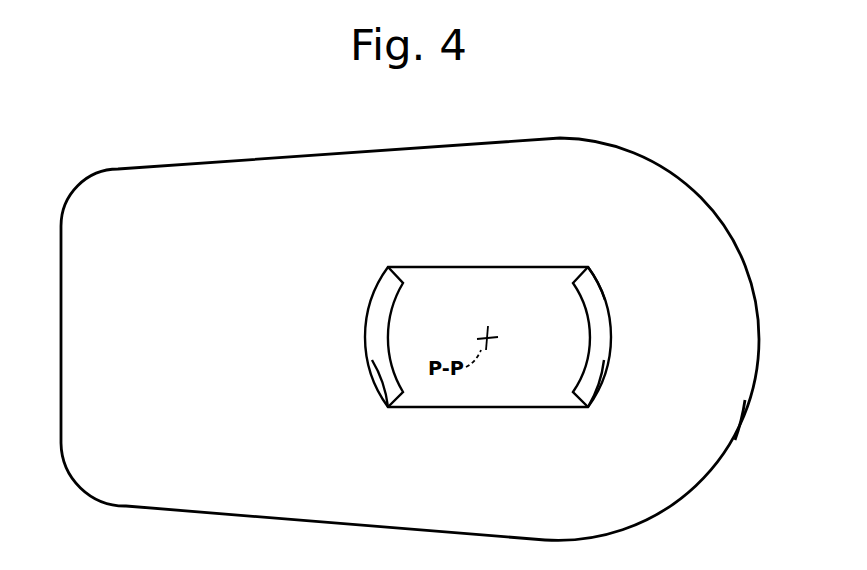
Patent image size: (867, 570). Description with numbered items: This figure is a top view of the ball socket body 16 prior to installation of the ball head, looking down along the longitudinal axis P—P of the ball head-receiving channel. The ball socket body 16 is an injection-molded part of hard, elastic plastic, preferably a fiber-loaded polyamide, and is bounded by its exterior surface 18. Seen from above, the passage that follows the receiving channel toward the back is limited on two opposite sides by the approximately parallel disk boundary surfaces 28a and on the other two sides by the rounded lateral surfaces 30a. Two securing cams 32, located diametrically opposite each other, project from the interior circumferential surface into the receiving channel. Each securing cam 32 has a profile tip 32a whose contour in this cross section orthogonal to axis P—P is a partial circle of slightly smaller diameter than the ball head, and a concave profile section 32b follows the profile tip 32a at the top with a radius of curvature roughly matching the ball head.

The ball socket body 16 is at (741, 334).
The exterior surface 18 is at (748, 402).
The disk boundary surfaces 28a is at (490, 265).
The rounded lateral surfaces 30a is at (371, 327).
The securing cams 32 is at (382, 362).
The profile tip 32a is at (588, 342).
The concave profile section 32b is at (594, 304).